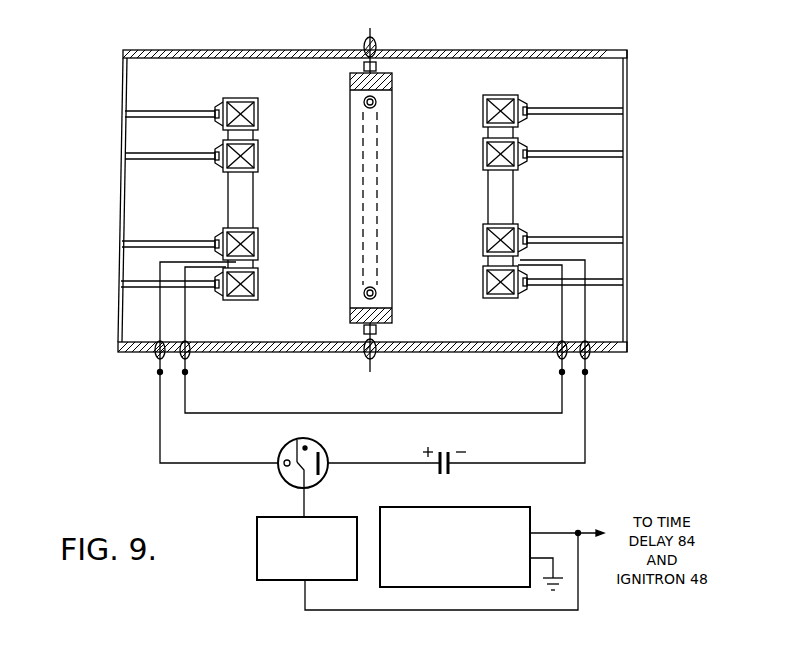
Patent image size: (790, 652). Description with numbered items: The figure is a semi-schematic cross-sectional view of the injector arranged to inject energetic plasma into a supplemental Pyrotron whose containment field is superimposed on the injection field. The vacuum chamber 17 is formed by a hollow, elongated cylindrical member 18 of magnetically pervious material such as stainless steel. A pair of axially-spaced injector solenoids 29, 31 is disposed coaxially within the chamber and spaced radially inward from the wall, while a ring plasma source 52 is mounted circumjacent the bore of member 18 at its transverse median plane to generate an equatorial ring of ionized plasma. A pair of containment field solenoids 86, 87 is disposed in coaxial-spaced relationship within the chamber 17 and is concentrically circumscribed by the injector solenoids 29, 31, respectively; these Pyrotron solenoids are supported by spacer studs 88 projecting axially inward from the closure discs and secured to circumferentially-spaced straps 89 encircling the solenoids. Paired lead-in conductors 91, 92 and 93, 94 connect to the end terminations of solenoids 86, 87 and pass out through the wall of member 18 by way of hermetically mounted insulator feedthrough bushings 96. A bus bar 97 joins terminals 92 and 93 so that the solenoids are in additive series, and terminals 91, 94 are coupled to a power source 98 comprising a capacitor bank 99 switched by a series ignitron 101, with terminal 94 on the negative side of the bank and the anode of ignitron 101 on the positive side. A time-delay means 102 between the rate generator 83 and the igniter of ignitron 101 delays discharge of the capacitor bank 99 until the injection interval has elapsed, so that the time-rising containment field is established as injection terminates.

The vacuum chamber 17 is at (434, 22).
The cylindrical member 18 is at (240, 50).
The injector solenoid 29 is at (236, 100).
The injector solenoid 31 is at (500, 98).
The ring plasma source 52 is at (342, 250).
The containment field solenoid 86 is at (256, 240).
The containment field solenoid 87 is at (488, 160).
The spacer studs 88 is at (180, 240).
The straps 89 is at (262, 162).
The lead-in conductor 91 is at (158, 322).
The lead-in conductor 92 is at (187, 326).
The lead-in conductor 93 is at (560, 326).
The lead-in conductor 94 is at (588, 326).
The insulator feedthrough bushings 96 is at (157, 360).
The bus bar 97 is at (290, 412).
The power source 98 is at (255, 473).
The capacitor bank 99 is at (440, 478).
The ignitron 101 is at (323, 444).
The time-delay means 102 is at (256, 557).
The rate generator 83 is at (495, 507).